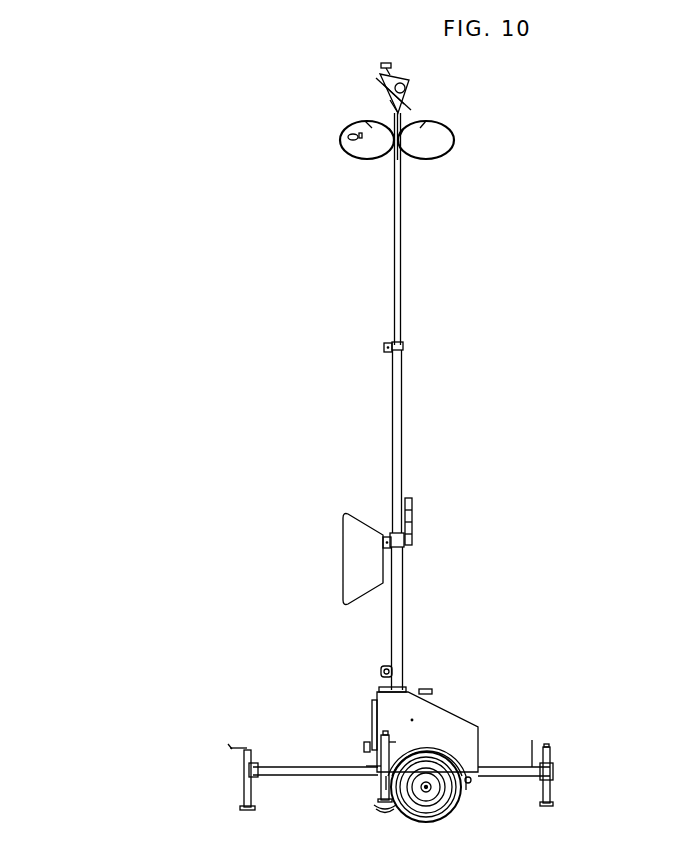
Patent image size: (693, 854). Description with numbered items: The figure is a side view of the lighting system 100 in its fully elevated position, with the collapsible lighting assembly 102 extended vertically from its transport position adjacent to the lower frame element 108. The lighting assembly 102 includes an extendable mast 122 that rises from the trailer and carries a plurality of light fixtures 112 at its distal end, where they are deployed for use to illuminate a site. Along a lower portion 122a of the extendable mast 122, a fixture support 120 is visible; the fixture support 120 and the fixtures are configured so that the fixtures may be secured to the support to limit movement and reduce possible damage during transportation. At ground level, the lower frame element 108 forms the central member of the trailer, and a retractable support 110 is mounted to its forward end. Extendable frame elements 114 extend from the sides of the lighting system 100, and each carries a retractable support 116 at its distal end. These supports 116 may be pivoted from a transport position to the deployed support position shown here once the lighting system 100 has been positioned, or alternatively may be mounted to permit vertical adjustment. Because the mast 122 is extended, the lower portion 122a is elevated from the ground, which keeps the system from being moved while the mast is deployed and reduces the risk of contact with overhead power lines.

The lighting system 100 is at (250, 480).
The collapsible lighting assembly 102 is at (400, 312).
The lower frame element 108 is at (501, 768).
The retractable support 110 is at (549, 785).
The light fixtures 112 is at (383, 93).
The extendable frame elements 114 is at (311, 766).
The retractable support 116 is at (245, 780).
The fixture support 120 is at (342, 560).
The extendable mast 122 is at (398, 430).
The lower portion of the extendable mast 122a is at (401, 622).